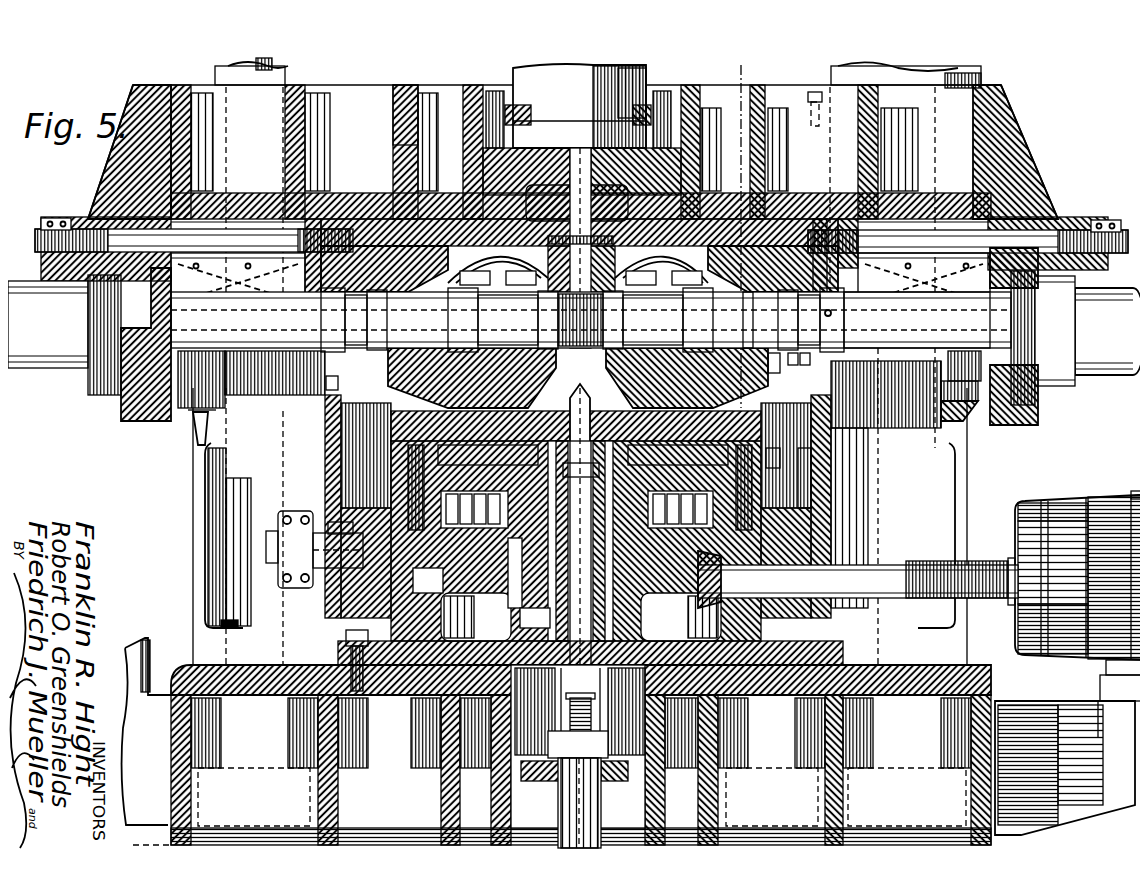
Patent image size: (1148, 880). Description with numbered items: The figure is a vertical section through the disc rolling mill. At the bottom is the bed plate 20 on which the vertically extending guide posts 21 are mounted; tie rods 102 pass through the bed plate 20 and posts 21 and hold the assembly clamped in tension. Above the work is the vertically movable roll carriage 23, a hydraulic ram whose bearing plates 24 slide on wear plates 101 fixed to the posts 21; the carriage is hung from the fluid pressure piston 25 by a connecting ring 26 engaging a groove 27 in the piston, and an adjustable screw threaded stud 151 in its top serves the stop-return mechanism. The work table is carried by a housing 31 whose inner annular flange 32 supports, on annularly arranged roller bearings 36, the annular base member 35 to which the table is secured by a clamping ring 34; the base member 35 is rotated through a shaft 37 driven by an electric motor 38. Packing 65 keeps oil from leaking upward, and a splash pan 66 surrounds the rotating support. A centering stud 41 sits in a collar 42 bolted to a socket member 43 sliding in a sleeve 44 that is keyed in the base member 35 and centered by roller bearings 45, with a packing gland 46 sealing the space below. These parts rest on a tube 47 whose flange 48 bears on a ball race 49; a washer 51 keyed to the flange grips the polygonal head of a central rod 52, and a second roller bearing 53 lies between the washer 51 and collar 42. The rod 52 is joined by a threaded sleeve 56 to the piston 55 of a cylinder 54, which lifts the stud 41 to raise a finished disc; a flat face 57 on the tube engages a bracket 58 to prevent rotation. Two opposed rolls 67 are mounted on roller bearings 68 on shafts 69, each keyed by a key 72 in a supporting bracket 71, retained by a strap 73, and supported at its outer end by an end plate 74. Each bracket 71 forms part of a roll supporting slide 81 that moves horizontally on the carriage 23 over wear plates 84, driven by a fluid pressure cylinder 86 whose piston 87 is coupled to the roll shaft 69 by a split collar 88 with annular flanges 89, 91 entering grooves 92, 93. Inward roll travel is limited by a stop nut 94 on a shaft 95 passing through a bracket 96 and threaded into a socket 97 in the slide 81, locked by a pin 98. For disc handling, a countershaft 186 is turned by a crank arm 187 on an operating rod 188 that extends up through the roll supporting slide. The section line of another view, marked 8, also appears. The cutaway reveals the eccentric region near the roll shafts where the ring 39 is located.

The bed plate 20 is at (178, 663).
The guide posts 21 is at (205, 64).
The roll carriage 23 is at (400, 98).
The bearing plates 24 is at (120, 416).
The fluid pressure piston 25 is at (628, 74).
The connecting ring 26 is at (665, 96).
The groove 27 is at (554, 106).
The housing 31 is at (372, 582).
The inner annular flange 32 is at (439, 592).
The clamping ring 34 is at (380, 428).
The annular base member 35 is at (772, 442).
The roller bearings 36 is at (681, 618).
The shaft 37 is at (890, 562).
The electric motor 38 is at (1095, 496).
The gear case lid 39 is at (576, 420).
The centering stud 41 is at (566, 394).
The collar 42 is at (585, 438).
The socket member 43 is at (488, 432).
The sleeve 44 is at (516, 468).
The roller bearings 45 is at (520, 620).
The packing gland 46 is at (586, 676).
The tube 47 is at (490, 578).
The flange 48 is at (452, 422).
The ball race 49 is at (626, 476).
The washer 51 is at (713, 464).
The central rod 52 is at (512, 612).
The second roller bearing 53 is at (660, 426).
The cylinder 54 is at (580, 811).
The piston 55 is at (594, 735).
The threaded sleeve 56 is at (588, 706).
The flat face 57 is at (587, 688).
The bracket 58 is at (588, 720).
The packing 65 is at (806, 456).
The splash pan 66 is at (322, 452).
The rolls 67 is at (581, 214).
The roller bearings 68 is at (599, 320).
The shaft 69 is at (420, 321).
The supporting bracket 71 is at (381, 196).
The key 72 is at (740, 296).
The strap 73 is at (768, 366).
The end plate 74 is at (586, 224).
The roll supporting slide 81 is at (440, 207).
The wear plates 84 is at (229, 260).
The fluid pressure cylinder 86 is at (40, 362).
The piston 87 is at (583, 391).
The split collar 88 is at (320, 392).
The annular flange 89 is at (917, 320).
The annular flange 91 is at (799, 371).
The groove 92 is at (818, 310).
The groove 93 is at (814, 371).
The stop nut 94 is at (42, 210).
The shaft 95 is at (118, 226).
The bracket 96 is at (108, 172).
The socket 97 is at (840, 220).
The pin 98 is at (316, 218).
The wear plates 101 is at (986, 82).
The tie rods 102 is at (300, 60).
The screw threaded stud 151 is at (806, 84).
The countershaft 186 is at (356, 556).
The crank arm 187 is at (325, 510).
The operating rod 188 is at (328, 374).
The section line 8- 8 is at (728, 72).